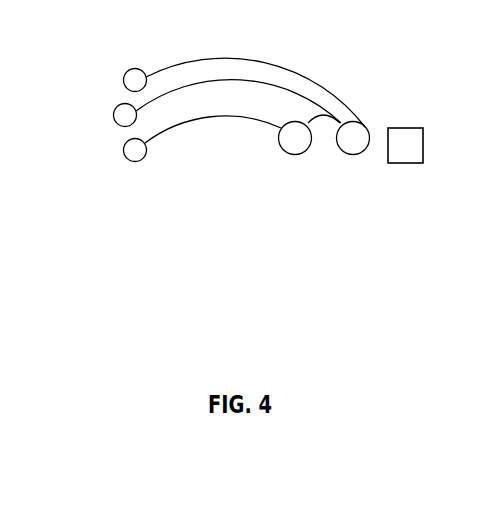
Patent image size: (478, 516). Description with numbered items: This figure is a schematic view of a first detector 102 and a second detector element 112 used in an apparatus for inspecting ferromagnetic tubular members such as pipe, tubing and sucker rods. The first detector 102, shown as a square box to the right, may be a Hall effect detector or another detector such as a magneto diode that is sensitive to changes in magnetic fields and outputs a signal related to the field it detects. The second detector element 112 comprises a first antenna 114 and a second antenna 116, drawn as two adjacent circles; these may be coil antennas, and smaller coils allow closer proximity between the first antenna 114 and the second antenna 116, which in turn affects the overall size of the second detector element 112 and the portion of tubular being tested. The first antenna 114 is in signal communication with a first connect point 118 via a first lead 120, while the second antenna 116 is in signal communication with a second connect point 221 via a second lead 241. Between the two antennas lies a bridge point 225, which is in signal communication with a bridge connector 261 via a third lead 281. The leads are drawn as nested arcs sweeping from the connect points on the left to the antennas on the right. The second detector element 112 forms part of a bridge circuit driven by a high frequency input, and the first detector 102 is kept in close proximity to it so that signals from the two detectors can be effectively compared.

The first detector 102 is at (405, 128).
The second detector element 112 is at (380, 245).
The first antenna 114 is at (295, 155).
The second antenna 116 is at (352, 155).
The first connect point 118 is at (125, 142).
The first lead 120 is at (163, 135).
The second connect point 221 is at (124, 75).
The bridge point 225 is at (320, 126).
The second lead 241 is at (302, 78).
The bridge connector 261 is at (114, 106).
The third lead 281 is at (197, 83).